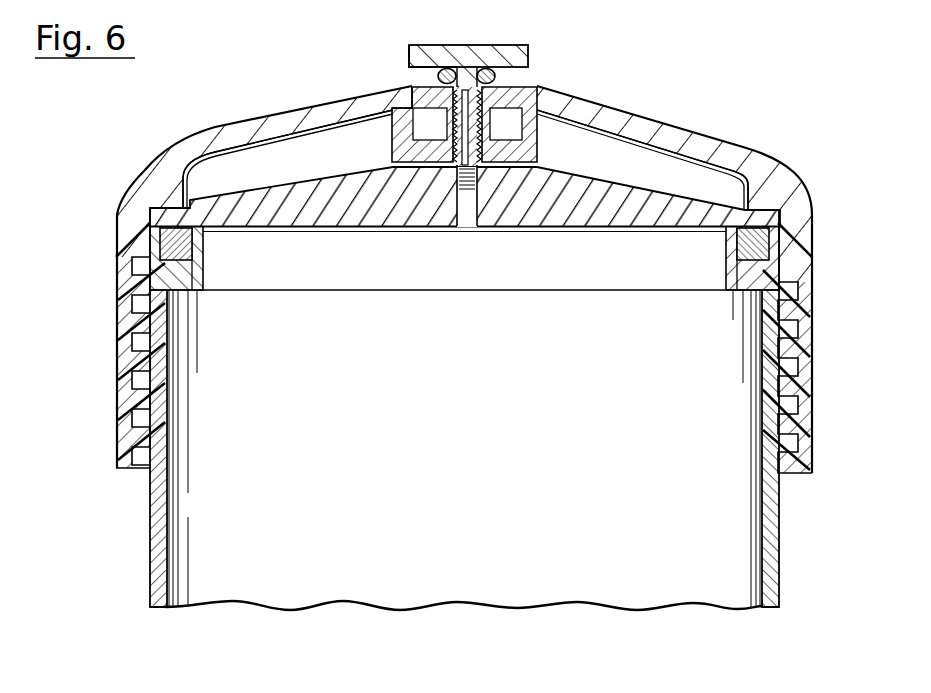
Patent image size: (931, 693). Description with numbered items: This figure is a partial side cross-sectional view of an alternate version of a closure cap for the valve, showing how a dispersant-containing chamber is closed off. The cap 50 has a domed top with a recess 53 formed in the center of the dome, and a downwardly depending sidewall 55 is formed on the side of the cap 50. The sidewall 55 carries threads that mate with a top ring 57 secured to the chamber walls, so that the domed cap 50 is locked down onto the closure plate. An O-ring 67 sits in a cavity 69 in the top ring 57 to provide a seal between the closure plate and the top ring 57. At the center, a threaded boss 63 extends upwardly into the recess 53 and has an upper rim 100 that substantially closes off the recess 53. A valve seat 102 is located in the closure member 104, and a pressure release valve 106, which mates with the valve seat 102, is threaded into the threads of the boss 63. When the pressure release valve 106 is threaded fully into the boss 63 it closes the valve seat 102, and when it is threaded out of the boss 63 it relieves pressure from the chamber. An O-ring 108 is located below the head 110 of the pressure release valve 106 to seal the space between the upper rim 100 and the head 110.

The cap 50 is at (754, 130).
The recess 53 is at (543, 106).
The sidewall 55 is at (116, 362).
The top ring 57 is at (150, 517).
The threaded boss 63 is at (414, 126).
The O-ring 67 is at (782, 250).
The cavity 69 is at (732, 262).
The upper rim 100 is at (510, 125).
The valve seat 102 is at (413, 226).
The closure member 104 is at (512, 228).
The pressure release valve 106 is at (397, 51).
The O-ring 108 is at (438, 78).
The head 110 is at (482, 45).